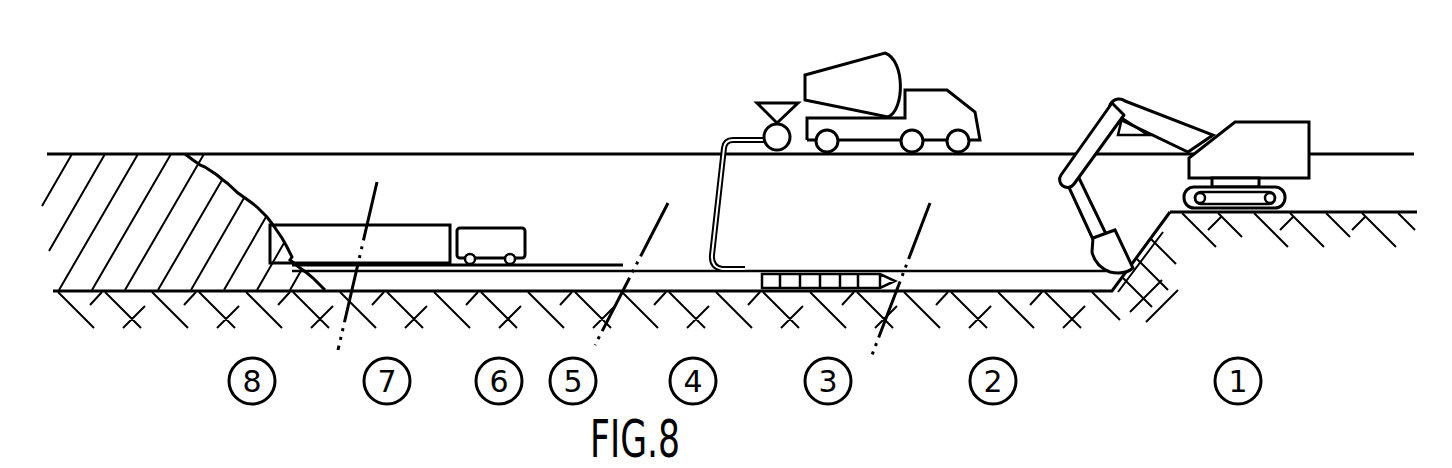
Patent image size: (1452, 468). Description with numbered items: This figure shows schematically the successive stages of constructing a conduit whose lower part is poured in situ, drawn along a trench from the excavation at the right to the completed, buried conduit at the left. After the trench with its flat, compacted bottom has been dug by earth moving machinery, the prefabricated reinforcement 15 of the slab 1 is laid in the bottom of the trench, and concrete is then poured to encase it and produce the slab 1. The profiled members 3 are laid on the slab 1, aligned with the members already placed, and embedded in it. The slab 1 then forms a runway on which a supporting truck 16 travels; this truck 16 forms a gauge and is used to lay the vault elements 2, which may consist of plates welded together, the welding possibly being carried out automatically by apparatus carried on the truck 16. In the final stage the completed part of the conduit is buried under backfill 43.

The backfill 43 is at (228, 212).
The vault elements 2 is at (400, 235).
The truck 16 is at (482, 243).
The profiled members 3 is at (567, 263).
The slab 1 is at (668, 280).
The reinforcement 15 is at (862, 270).